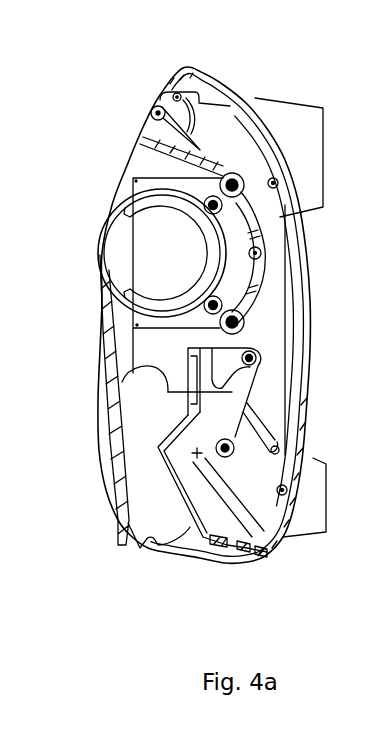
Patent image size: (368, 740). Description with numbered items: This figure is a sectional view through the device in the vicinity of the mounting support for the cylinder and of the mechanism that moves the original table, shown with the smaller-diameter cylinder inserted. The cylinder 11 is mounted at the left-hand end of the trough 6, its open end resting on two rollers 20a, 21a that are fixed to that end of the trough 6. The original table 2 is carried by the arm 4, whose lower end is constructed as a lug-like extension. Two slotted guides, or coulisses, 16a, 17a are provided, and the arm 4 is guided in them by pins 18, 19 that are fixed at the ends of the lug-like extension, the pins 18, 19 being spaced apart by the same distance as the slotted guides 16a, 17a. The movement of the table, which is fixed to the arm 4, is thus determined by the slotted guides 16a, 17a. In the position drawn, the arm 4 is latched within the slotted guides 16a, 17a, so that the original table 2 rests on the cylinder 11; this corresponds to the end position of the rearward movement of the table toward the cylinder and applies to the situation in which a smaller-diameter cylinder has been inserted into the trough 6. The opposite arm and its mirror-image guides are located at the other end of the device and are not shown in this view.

The original table 2 is at (135, 532).
The arm 4 is at (168, 520).
The trough 6 is at (200, 150).
The cylinder 11 is at (118, 208).
The slotted guide 16a is at (260, 548).
The slotted guide 17a is at (258, 432).
The pin 18 is at (258, 361).
The pin 19 is at (240, 448).
The roller 20a is at (302, 220).
The roller 21a is at (233, 308).